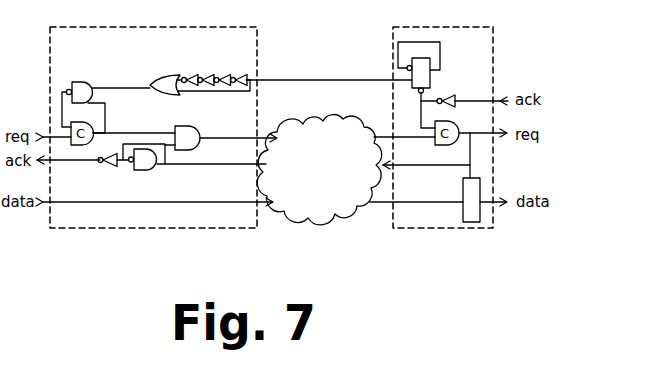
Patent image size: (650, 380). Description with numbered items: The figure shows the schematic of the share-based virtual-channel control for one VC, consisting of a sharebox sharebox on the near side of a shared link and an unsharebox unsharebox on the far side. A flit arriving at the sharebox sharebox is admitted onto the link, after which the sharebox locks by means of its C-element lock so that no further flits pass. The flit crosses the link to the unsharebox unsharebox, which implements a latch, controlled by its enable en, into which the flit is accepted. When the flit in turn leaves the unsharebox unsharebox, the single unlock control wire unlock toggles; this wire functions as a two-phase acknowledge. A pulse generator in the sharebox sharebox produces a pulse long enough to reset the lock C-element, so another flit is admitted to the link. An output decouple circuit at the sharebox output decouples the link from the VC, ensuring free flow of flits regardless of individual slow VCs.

The element sharebox is at (153, 140).
The element unsharebox is at (443, 140).
The unlock control wire unlock is at (331, 74).
The enable latch en is at (471, 200).